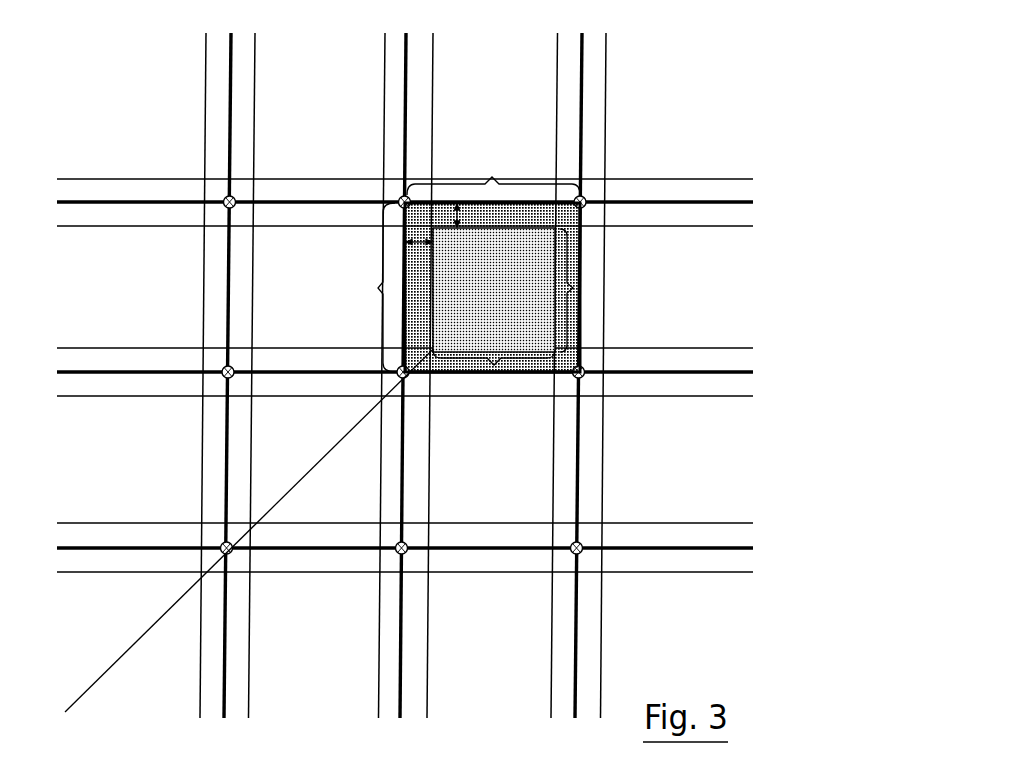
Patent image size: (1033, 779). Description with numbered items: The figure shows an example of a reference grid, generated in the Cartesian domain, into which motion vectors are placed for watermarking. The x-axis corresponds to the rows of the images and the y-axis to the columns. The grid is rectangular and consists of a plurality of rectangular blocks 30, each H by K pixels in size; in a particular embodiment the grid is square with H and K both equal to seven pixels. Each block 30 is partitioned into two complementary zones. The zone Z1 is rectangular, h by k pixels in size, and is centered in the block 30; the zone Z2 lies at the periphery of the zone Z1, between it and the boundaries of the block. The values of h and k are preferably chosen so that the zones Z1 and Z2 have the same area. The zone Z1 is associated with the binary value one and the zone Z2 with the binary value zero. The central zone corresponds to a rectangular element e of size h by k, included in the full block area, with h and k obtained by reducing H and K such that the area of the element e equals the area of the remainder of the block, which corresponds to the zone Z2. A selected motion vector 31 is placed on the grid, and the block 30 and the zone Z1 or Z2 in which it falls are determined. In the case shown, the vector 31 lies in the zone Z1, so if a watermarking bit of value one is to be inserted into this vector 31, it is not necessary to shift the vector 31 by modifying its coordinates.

The rectangular block 30 is at (405, 375).
The motion vector 31 is at (307, 470).
The zone Z2 is at (572, 221).
The zone Z1 is at (692, 518).
The rectangular element e is at (604, 358).
The block width K is at (493, 172).
The block height H is at (376, 287).
The zone height h is at (581, 290).
The zone width k is at (494, 375).